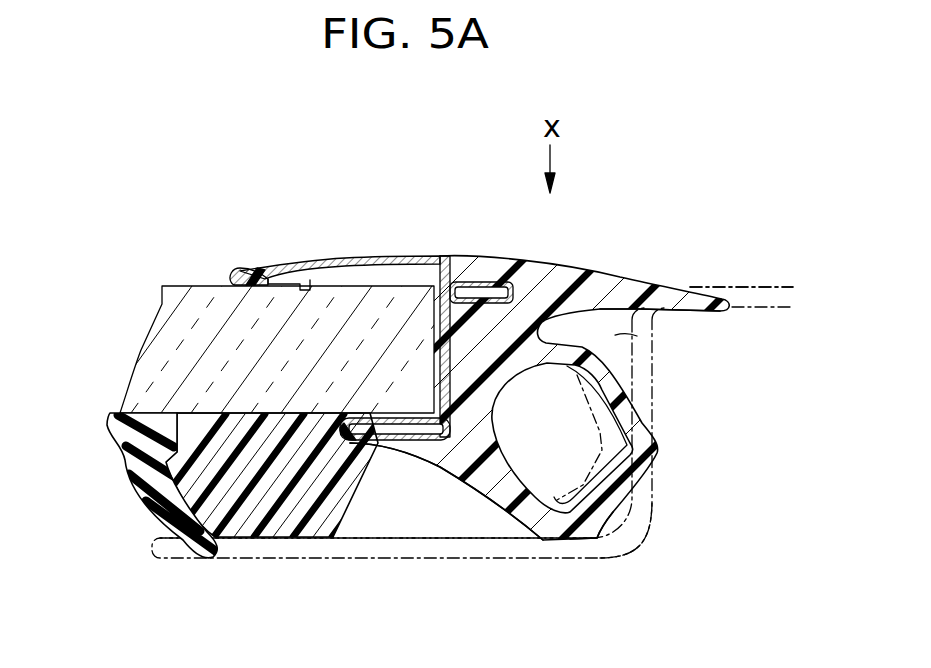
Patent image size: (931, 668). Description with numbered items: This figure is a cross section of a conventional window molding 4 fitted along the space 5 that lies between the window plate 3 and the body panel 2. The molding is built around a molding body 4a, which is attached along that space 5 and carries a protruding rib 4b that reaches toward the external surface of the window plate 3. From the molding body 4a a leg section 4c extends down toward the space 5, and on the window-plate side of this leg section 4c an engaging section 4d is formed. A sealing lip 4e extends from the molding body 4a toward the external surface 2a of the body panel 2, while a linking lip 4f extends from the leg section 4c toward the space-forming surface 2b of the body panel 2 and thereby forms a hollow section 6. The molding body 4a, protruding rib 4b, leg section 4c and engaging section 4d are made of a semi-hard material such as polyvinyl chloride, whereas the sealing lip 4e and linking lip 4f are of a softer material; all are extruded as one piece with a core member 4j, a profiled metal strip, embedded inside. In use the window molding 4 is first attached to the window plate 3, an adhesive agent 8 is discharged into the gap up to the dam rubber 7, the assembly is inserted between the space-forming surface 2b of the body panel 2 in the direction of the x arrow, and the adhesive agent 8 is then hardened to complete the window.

The body panel 2 is at (770, 287).
The external surface of the body panel 2a is at (707, 287).
The space-forming surface of the body panel 2b is at (652, 506).
The window plate 3 is at (162, 304).
The window molding 4 is at (488, 248).
The molding body 4a is at (440, 255).
The protruding rib 4b is at (238, 268).
The leg section 4c is at (468, 458).
The engaging section 4d is at (378, 447).
The sealing lip 4e is at (604, 273).
The linking lip 4f is at (603, 528).
The core member 4j is at (328, 260).
The space 5 is at (630, 334).
The hollow section 6 is at (545, 500).
The dam rubber 7 is at (165, 520).
The adhesive agent 8 is at (263, 517).